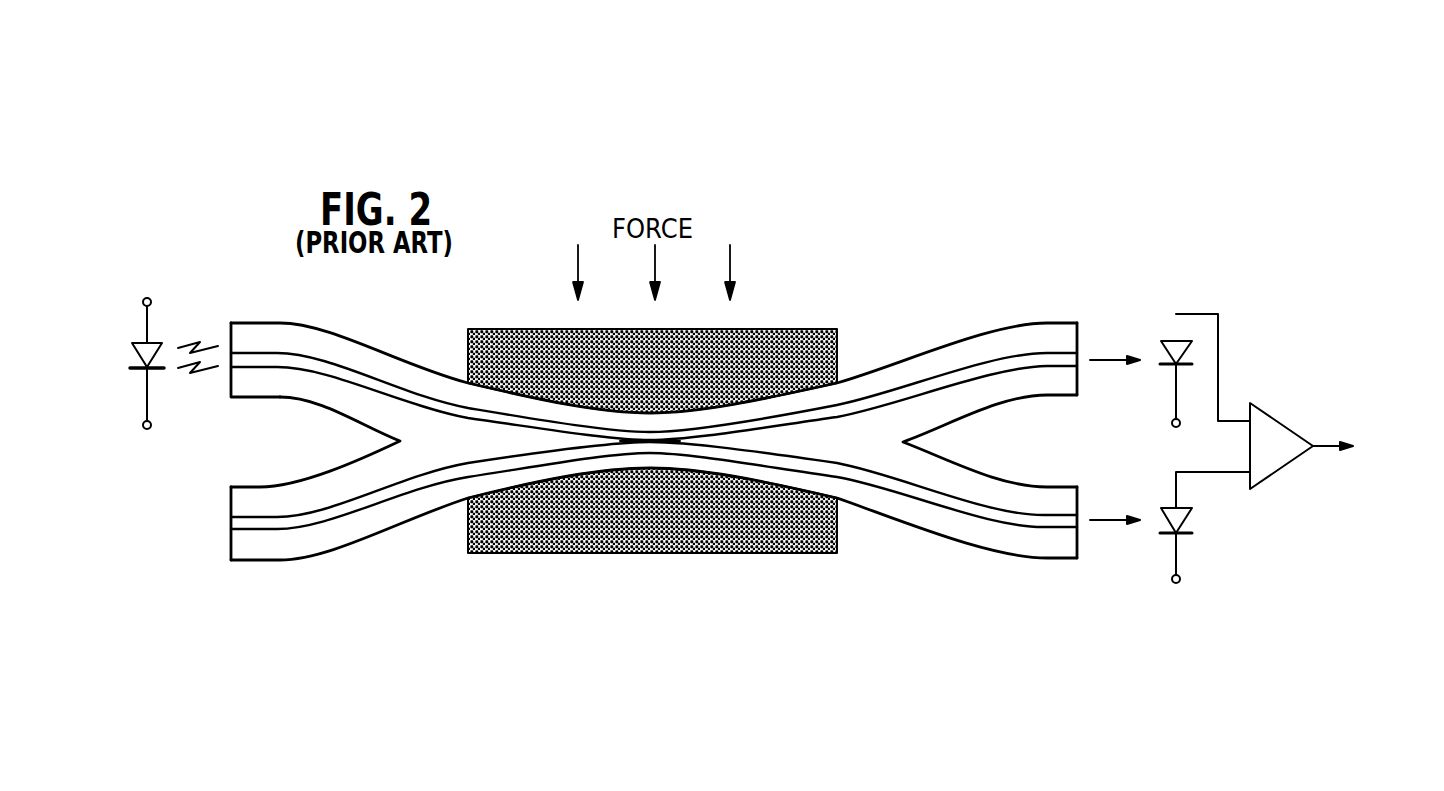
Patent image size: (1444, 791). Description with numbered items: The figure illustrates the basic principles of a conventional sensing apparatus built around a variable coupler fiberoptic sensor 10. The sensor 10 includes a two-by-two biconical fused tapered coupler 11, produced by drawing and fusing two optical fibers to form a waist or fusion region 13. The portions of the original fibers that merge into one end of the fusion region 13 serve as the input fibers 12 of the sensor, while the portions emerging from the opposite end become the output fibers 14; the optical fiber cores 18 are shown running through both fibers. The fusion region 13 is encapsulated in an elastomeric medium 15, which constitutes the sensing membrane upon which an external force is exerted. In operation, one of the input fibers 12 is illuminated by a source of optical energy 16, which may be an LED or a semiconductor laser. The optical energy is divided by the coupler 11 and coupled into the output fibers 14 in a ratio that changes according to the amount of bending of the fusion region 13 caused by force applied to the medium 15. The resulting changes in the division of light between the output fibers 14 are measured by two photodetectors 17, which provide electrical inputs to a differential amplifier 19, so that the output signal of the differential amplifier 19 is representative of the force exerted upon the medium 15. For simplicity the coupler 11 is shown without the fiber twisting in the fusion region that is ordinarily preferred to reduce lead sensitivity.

The variable coupler fiberoptic sensor 10 is at (826, 274).
The biconical fused tapered coupler 11 is at (878, 498).
The input fibers 12 is at (375, 368).
The fusion region 13 is at (650, 442).
The output fibers 14 is at (990, 342).
The elastomeric medium 15 is at (508, 329).
The source of optical energy 16 is at (157, 343).
The photodetectors 17 is at (1168, 340).
The optical fiber cores 18 is at (277, 353).
The differential amplifier 19 is at (1283, 470).